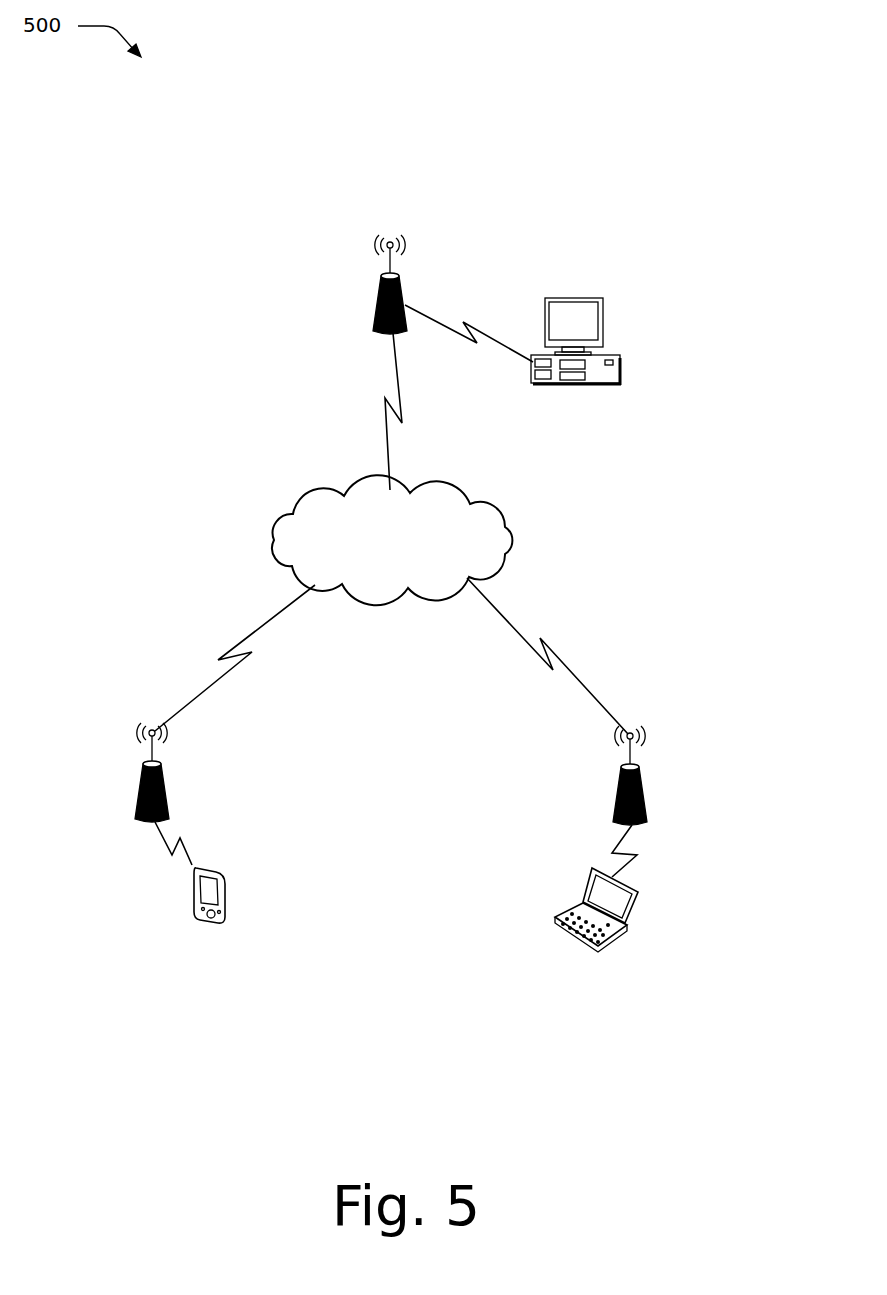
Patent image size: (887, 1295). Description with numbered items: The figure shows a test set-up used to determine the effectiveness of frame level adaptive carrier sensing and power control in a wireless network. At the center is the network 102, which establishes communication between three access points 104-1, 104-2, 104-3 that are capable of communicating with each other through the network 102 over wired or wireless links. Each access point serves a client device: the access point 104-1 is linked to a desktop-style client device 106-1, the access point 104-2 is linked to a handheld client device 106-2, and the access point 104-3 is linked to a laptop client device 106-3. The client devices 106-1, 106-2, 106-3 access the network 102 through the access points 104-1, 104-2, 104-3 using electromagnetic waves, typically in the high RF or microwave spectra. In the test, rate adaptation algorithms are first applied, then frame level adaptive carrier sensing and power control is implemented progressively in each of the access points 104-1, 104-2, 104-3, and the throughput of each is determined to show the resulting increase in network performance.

The network 102 is at (409, 554).
The access point 104-1 is at (380, 292).
The access point 104-2 is at (140, 788).
The access point 104-3 is at (645, 792).
The client device 106-1 is at (603, 298).
The client device 106-2 is at (212, 925).
The client device 106-3 is at (627, 930).